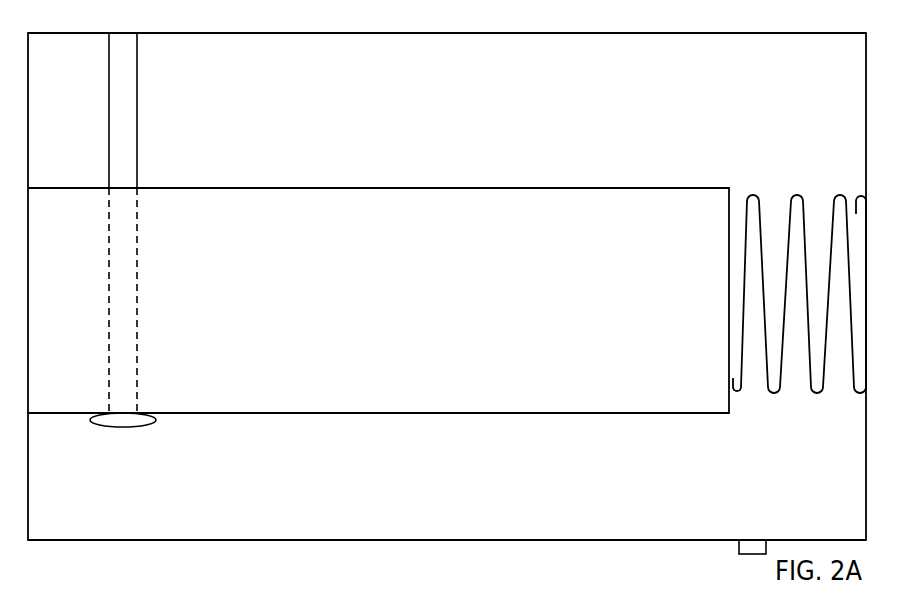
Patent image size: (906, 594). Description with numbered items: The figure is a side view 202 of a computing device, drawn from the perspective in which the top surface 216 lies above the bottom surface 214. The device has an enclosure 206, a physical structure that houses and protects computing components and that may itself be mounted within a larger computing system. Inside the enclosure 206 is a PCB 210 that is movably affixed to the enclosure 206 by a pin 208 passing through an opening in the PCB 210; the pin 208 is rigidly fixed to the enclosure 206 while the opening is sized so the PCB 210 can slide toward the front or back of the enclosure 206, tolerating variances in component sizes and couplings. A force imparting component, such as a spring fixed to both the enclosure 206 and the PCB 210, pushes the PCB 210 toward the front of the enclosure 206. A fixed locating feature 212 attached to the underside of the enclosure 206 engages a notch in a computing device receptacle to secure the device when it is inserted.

The side view 202 is at (443, 541).
The enclosure 206 is at (507, 60).
The pin 208 is at (170, 428).
The PCB 210 is at (418, 310).
The fixed locating feature 212 is at (752, 540).
The bottom surface 214 is at (165, 536).
The top surface 216 is at (167, 28).